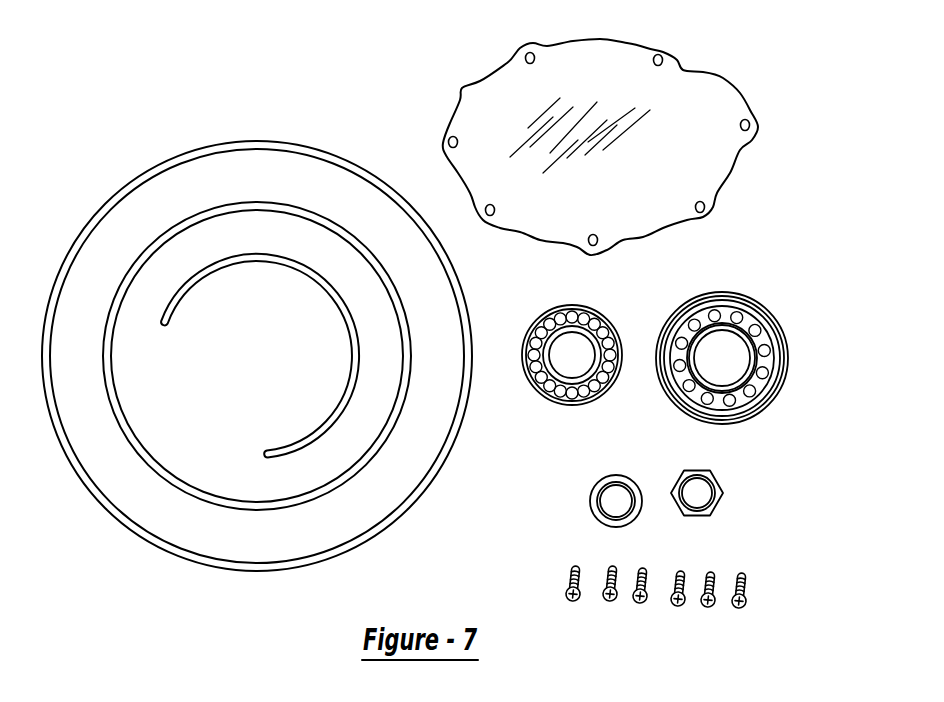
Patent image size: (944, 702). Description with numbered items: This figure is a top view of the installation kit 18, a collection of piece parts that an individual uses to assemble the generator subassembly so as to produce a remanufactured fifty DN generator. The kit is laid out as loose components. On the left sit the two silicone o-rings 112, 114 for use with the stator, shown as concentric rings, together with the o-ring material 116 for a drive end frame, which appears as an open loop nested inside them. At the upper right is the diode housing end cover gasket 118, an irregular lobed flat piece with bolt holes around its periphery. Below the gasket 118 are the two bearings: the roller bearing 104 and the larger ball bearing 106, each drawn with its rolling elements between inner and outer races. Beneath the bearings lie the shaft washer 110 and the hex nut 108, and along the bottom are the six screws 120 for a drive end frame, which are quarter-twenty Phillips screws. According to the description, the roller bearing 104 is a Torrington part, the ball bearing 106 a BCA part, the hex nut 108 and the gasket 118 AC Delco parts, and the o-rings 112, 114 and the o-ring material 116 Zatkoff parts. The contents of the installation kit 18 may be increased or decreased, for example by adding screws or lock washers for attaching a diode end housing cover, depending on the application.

The installation kit 18 is at (122, 163).
The roller bearing 104 is at (588, 306).
The ball bearing 106 is at (735, 310).
The hex nut 108 is at (714, 472).
The shaft washer 110 is at (596, 487).
The silicone o-ring 112 is at (146, 456).
The silicone o-ring 114 is at (408, 503).
The o-ring material 116 is at (218, 263).
The diode housing end cover gasket 118 is at (667, 122).
The screws 120 is at (744, 581).